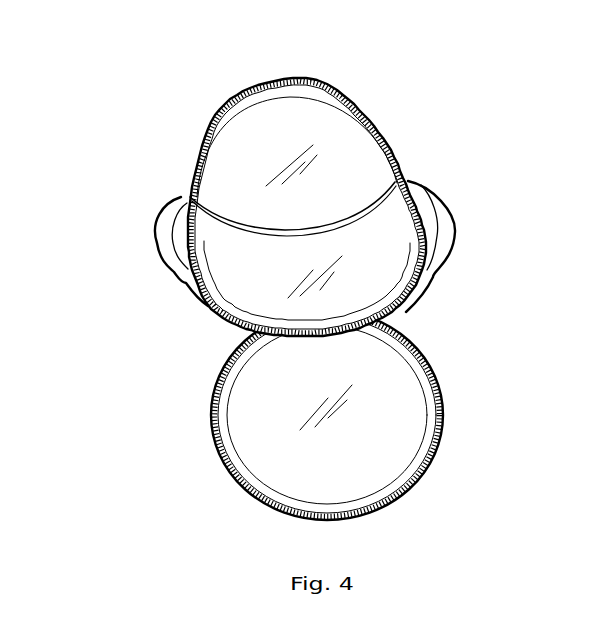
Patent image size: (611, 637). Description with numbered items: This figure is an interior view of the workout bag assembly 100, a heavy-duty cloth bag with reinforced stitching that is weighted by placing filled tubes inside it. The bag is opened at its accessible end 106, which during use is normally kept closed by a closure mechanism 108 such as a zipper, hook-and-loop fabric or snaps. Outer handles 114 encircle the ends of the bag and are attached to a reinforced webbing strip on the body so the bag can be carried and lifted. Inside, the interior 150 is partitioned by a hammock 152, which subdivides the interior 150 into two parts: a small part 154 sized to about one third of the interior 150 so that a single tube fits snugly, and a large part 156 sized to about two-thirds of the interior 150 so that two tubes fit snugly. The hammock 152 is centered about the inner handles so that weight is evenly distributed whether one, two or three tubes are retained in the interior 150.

The workout bag assembly 100 is at (95, 111).
The accessible end 106 is at (283, 480).
The closure mechanism 108 is at (393, 157).
The outer handles 114 is at (157, 230).
The interior 150 is at (352, 165).
The hammock 152 is at (230, 212).
The small part 154 is at (312, 125).
The large part 156 is at (232, 281).